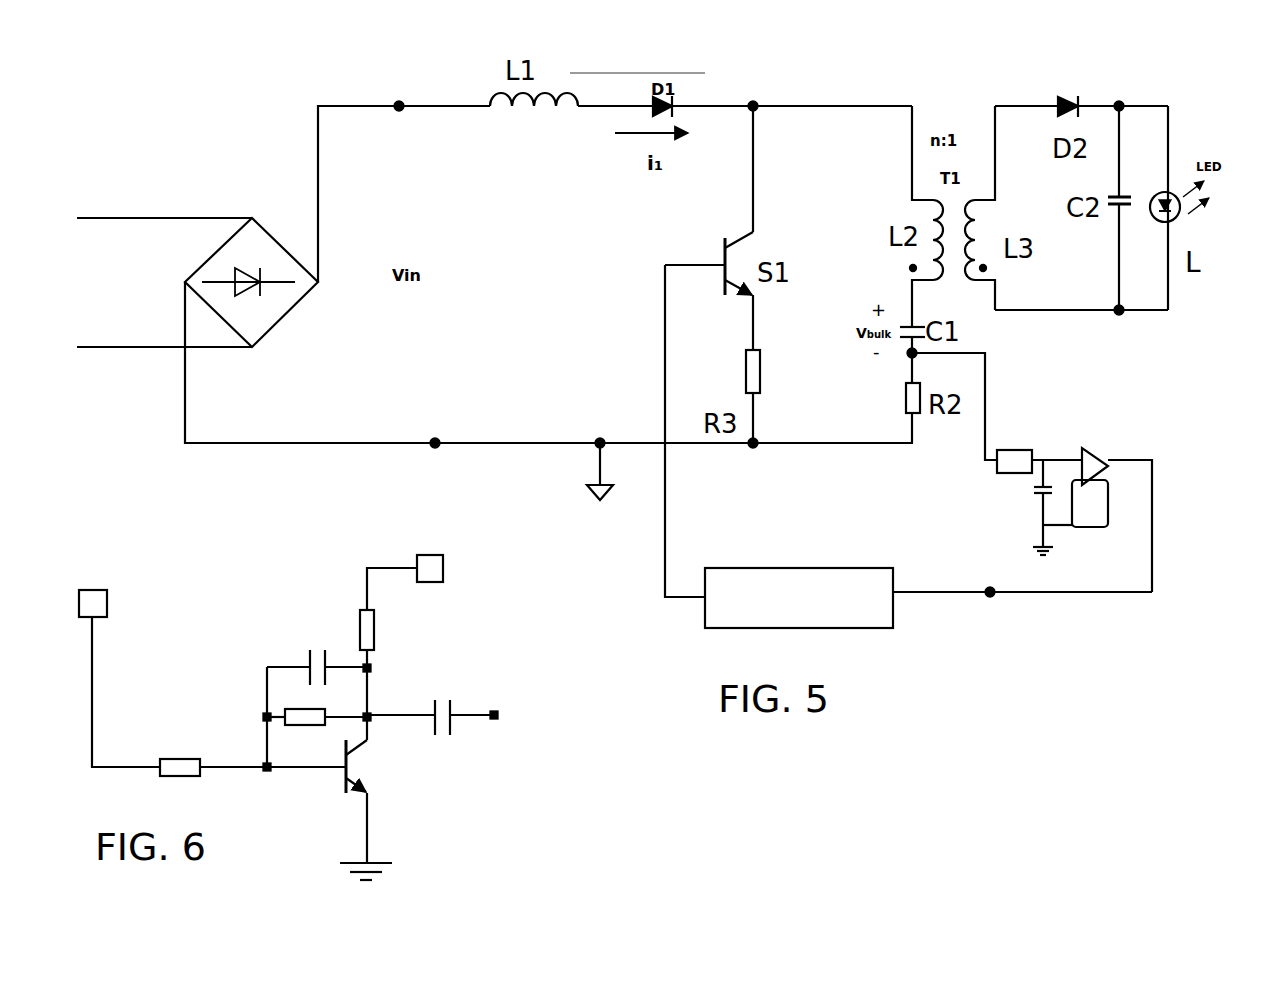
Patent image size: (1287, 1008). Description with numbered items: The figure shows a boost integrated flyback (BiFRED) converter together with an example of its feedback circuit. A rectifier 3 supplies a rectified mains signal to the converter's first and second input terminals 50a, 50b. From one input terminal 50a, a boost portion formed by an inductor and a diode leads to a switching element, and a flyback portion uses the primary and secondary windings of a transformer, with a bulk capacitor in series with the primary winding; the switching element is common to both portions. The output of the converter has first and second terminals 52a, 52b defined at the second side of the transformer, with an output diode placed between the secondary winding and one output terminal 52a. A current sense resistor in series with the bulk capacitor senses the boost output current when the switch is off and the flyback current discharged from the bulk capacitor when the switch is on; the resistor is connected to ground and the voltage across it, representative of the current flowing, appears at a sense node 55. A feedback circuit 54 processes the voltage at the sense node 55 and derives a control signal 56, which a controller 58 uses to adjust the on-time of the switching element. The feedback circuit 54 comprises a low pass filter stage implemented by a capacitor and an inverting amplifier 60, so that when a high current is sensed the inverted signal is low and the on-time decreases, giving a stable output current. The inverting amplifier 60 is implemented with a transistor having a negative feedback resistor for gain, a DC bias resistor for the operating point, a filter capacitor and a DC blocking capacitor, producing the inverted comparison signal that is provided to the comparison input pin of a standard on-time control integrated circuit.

In FIG. 5, the rectifier 3 is at (208, 197).
In FIG. 5, the first terminal 50a is at (400, 104).
In FIG. 5, the second terminal 50b is at (436, 441).
In FIG. 5, the first terminal of the output 52a is at (1119, 105).
In FIG. 5, the second terminal of the output 52b is at (1118, 313).
In FIG. 5, the feedback circuit 54 is at (982, 521).
In FIG. 6, the feedback circuit 54 is at (260, 631).
In FIG. 5, the sense node 55 is at (908, 356).
In FIG. 6, the sense node 55 is at (100, 590).
In FIG. 5, the control signal 56 is at (990, 594).
In FIG. 5, the controller 58 is at (771, 567).
In FIG. 5, the inverting amplifier 60 is at (1091, 461).